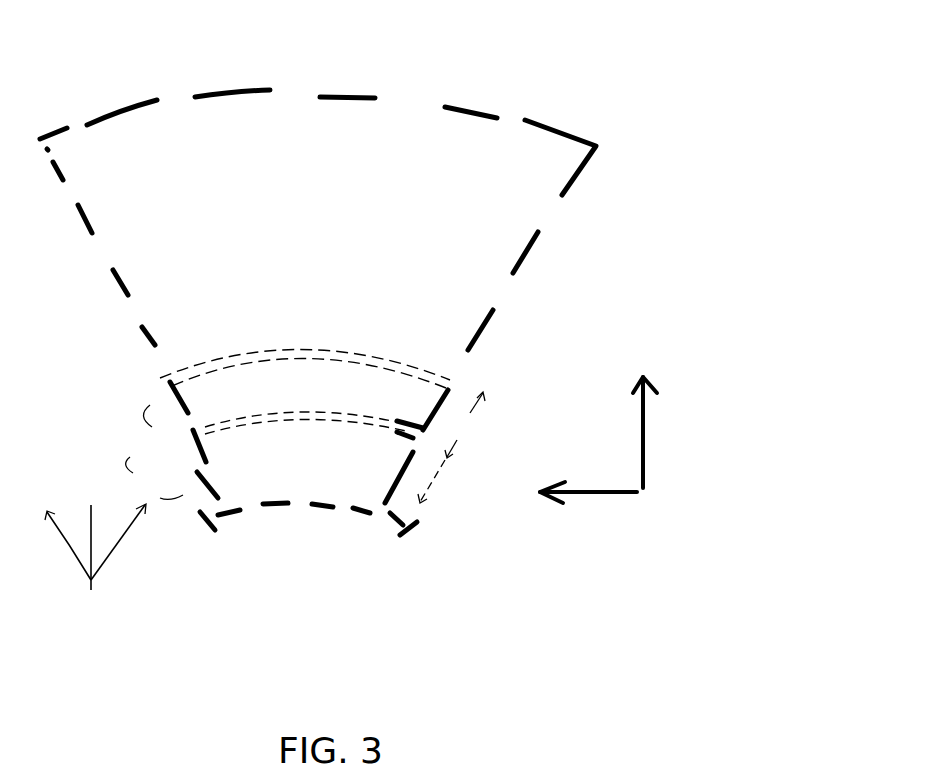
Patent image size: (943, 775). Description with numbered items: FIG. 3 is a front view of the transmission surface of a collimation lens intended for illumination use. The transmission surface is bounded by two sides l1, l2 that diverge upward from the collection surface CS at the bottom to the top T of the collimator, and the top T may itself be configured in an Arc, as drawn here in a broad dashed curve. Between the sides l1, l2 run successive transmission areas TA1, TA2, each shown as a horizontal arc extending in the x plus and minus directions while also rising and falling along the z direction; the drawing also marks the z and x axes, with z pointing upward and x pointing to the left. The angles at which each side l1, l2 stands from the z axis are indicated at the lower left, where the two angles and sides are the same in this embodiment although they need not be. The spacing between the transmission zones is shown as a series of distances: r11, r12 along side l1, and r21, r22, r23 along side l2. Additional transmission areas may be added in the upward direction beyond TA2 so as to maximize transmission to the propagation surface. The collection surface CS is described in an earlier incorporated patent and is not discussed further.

The top T is at (333, 71).
The arc Arc is at (636, 62).
The side l1 is at (112, 281).
The side l2 is at (523, 269).
The collection surface CS is at (320, 515).
The transmission area TA1 is at (187, 432).
The transmission area TA2 is at (165, 375).
The distance between transmission zones r11 is at (175, 500).
The distance between transmission zones r12 is at (140, 418).
The distance between transmission zones r21 is at (416, 480).
The distance between transmission zones r22 is at (462, 440).
The distance between transmission zones r23 is at (491, 385).
The z axis z is at (660, 432).
The x axis x is at (588, 506).